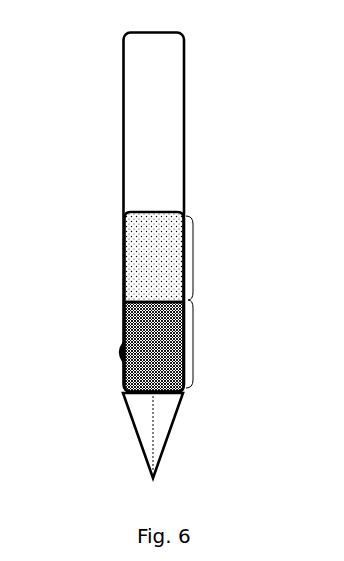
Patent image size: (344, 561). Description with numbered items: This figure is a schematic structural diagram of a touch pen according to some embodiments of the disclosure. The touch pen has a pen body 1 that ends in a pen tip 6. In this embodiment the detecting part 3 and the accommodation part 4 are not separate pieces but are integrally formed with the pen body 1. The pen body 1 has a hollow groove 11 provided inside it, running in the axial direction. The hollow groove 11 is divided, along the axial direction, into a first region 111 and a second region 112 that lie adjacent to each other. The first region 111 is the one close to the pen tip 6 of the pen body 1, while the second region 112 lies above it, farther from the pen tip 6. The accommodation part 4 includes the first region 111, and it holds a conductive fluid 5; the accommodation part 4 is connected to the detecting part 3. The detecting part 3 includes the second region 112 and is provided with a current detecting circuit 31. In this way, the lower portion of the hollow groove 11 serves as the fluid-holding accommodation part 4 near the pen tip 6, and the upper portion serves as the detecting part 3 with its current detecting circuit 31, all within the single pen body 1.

The pen body 1 is at (184, 156).
The detecting part 3 is at (144, 232).
The current detecting circuit 31 is at (130, 252).
The accommodation part 4 is at (148, 339).
The conductive fluid 5 is at (122, 337).
The pen tip 6 is at (132, 431).
The hollow groove 11 is at (242, 247).
The first region 111 is at (178, 347).
The second region 112 is at (178, 257).